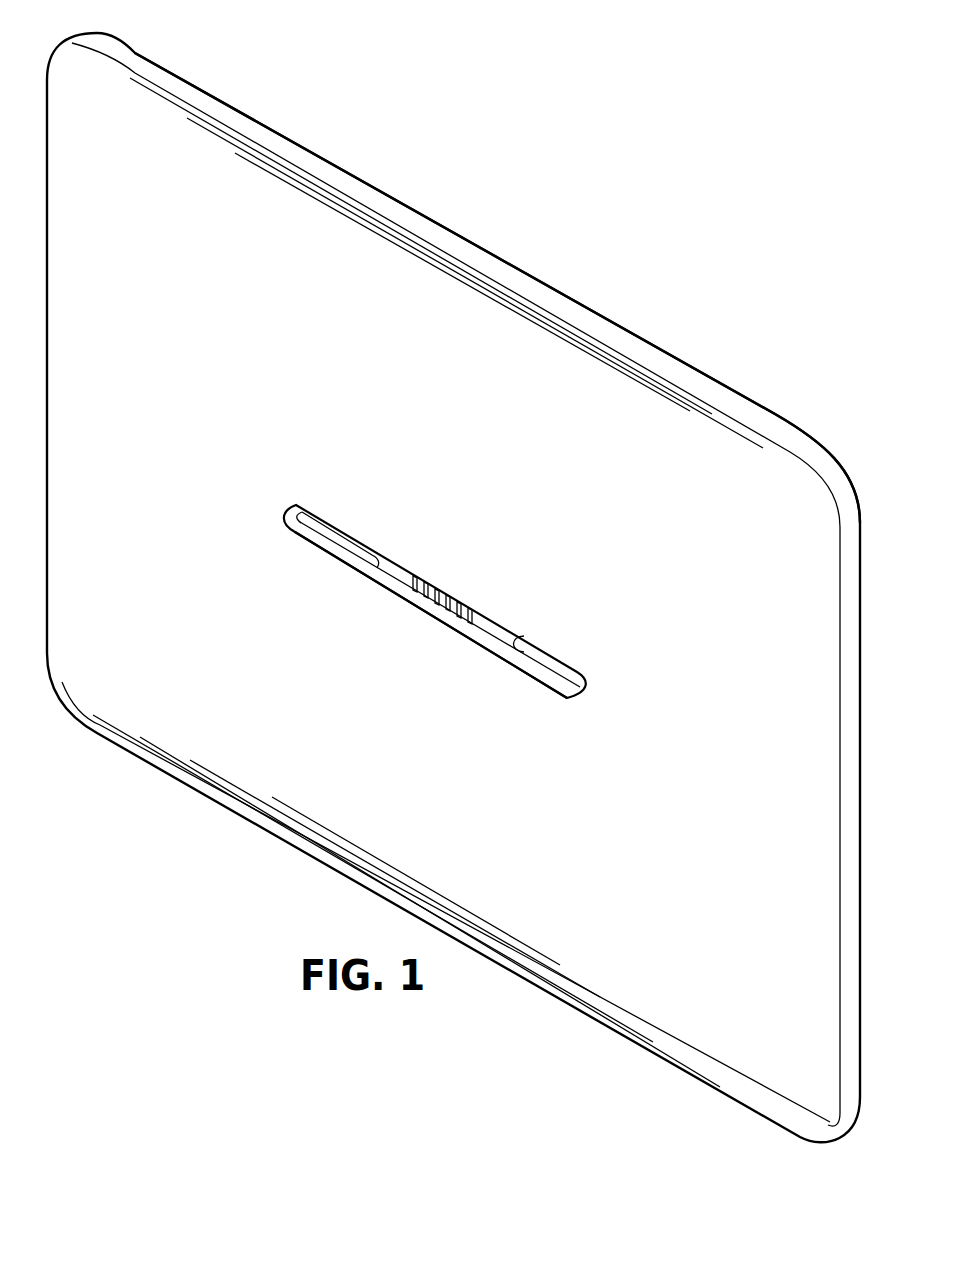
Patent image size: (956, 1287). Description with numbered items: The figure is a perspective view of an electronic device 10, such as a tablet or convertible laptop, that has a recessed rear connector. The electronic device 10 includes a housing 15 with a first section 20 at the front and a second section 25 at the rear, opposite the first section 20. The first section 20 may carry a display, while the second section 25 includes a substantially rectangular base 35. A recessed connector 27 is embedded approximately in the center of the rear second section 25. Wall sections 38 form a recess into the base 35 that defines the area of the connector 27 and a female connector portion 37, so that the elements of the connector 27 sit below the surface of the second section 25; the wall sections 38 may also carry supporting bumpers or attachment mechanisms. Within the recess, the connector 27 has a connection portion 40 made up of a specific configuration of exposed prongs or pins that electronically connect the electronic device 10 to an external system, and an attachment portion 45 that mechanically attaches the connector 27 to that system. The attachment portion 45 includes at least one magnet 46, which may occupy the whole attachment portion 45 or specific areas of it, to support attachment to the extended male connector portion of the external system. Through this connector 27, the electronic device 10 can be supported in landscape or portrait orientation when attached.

The electronic device 10 is at (507, 190).
The housing 15 is at (610, 323).
The first section 20 is at (760, 404).
The second section 25 is at (785, 472).
The recessed connector 27 is at (407, 561).
The base 35 is at (230, 812).
The female connector portion 37 is at (375, 583).
The wall sections 38 is at (487, 648).
The connection portion 40 is at (479, 614).
The attachment portion 45 is at (500, 627).
The magnet 46 is at (342, 533).